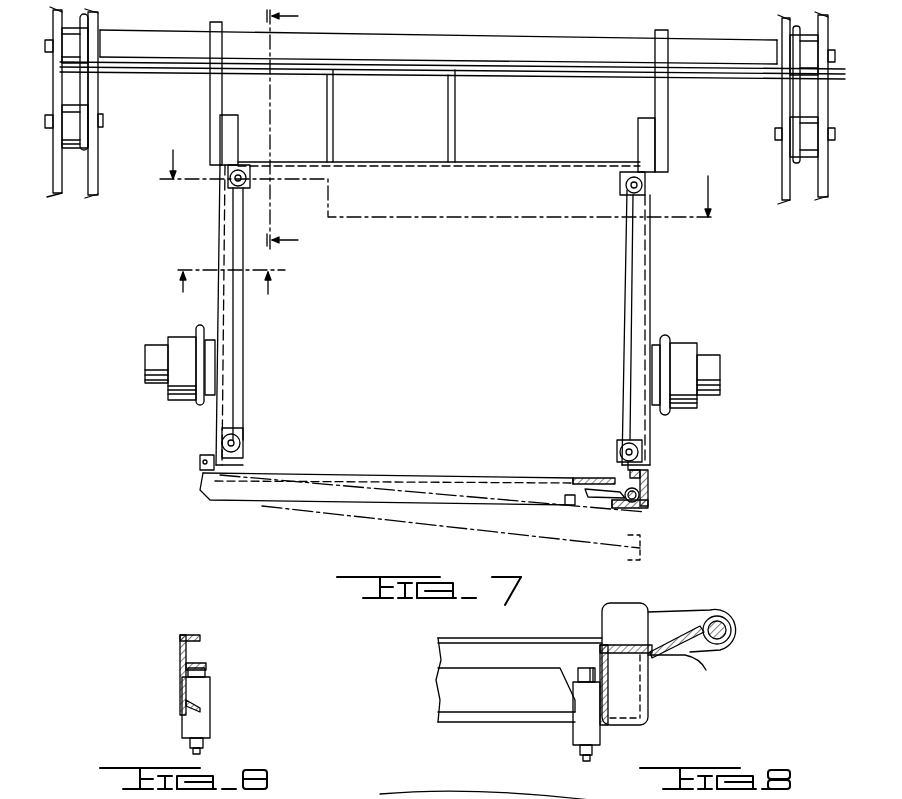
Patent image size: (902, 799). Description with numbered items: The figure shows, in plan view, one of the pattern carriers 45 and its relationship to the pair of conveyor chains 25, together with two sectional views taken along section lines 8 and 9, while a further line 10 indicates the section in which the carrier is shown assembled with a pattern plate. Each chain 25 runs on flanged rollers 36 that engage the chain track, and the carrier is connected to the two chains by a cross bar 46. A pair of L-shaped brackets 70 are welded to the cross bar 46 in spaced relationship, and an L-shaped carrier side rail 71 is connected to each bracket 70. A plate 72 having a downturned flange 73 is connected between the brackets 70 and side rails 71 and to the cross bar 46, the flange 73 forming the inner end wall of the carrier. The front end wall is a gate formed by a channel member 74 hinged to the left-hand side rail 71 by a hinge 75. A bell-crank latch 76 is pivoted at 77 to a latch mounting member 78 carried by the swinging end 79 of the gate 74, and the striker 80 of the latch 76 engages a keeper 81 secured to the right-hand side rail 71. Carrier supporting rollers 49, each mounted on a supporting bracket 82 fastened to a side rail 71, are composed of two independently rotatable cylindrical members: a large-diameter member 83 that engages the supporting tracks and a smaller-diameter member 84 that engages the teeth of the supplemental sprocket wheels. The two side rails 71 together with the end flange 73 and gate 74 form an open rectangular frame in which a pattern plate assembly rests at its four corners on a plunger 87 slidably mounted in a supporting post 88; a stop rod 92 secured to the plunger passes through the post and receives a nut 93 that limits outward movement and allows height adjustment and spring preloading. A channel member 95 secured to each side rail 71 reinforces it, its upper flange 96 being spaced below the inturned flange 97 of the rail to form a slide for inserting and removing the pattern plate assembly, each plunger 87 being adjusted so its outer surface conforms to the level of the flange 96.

In FIG. 7, the section line 8— 8 is at (291, 132).
In FIG. 7, the section line 9— 9 is at (225, 292).
In FIG. 7, the section line 10— 10 is at (439, 173).
In FIG. 7, the conveyor chain 25 is at (89, 98).
In FIG. 7, the flanged roller 36 is at (66, 57).
In FIG. 7, the pattern carrier 45 is at (652, 296).
In FIG. 7, the cross bar 46 is at (173, 46).
In FIG. 8, the cross bar 46 is at (732, 634).
In FIG. 7, the supporting wheel 49 is at (180, 343).
In FIG. 7, the L-shaped bracket 70 is at (211, 106).
In FIG. 8, the L-shaped bracket 70 is at (684, 671).
In FIG. 7, the carrier side rail 71 is at (218, 240).
In FIG. 8, the carrier side rail 71 is at (440, 672).
In FIG. 9, the carrier side rail 71 is at (182, 688).
In FIG. 7, the plate 72 is at (556, 126).
In FIG. 8, the plate 72 is at (683, 626).
In FIG. 7, the downturned flange 73 is at (556, 165).
In FIG. 8, the downturned flange 73 is at (608, 700).
In FIG. 7, the channel member 74 is at (450, 477).
In FIG. 7, the hinge 75 is at (200, 463).
In FIG. 7, the latch 76 is at (595, 500).
In FIG. 7, the pivot 77 is at (645, 497).
In FIG. 7, the latch mounting member 78 is at (640, 506).
In FIG. 7, the swinging end 79 is at (650, 491).
In FIG. 7, the striker 80 is at (641, 469).
In FIG. 7, the keeper 81 is at (643, 478).
In FIG. 7, the supporting bracket 82 is at (211, 396).
In FIG. 7, the large-diameter cylindrical member 83 is at (176, 392).
In FIG. 7, the small-diameter cylindrical member 84 is at (158, 364).
In FIG. 7, the plunger 87 is at (242, 182).
In FIG. 8, the plunger 87 is at (590, 668).
In FIG. 9, the plunger 87 is at (206, 673).
In FIG. 7, the supporting post 88 is at (240, 192).
In FIG. 8, the supporting post 88 is at (575, 730).
In FIG. 9, the supporting post 88 is at (205, 728).
In FIG. 8, the stop rod 92 is at (586, 762).
In FIG. 9, the stop rod 92 is at (198, 754).
In FIG. 8, the nut 93 is at (594, 752).
In FIG. 9, the nut 93 is at (205, 745).
In FIG. 7, the channel member 95 is at (240, 386).
In FIG. 8, the channel member 95 is at (500, 705).
In FIG. 9, the channel member 95 is at (206, 707).
In FIG. 8, the upper flange 96 is at (478, 666).
In FIG. 9, the upper flange 96 is at (204, 666).
In FIG. 9, the inturned flange 97 is at (198, 638).